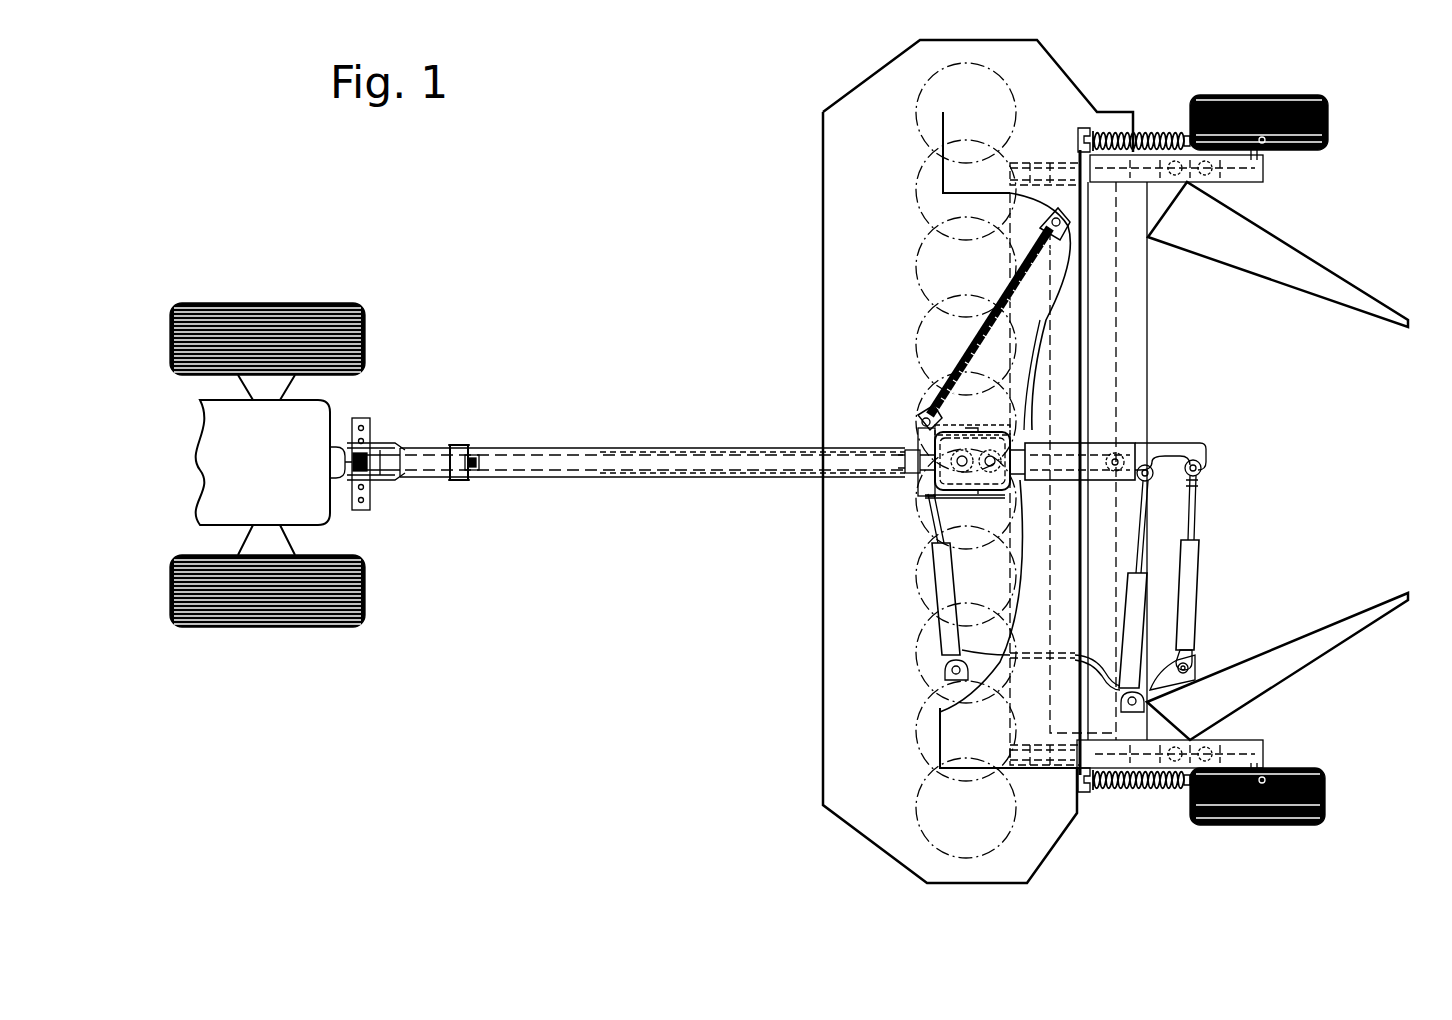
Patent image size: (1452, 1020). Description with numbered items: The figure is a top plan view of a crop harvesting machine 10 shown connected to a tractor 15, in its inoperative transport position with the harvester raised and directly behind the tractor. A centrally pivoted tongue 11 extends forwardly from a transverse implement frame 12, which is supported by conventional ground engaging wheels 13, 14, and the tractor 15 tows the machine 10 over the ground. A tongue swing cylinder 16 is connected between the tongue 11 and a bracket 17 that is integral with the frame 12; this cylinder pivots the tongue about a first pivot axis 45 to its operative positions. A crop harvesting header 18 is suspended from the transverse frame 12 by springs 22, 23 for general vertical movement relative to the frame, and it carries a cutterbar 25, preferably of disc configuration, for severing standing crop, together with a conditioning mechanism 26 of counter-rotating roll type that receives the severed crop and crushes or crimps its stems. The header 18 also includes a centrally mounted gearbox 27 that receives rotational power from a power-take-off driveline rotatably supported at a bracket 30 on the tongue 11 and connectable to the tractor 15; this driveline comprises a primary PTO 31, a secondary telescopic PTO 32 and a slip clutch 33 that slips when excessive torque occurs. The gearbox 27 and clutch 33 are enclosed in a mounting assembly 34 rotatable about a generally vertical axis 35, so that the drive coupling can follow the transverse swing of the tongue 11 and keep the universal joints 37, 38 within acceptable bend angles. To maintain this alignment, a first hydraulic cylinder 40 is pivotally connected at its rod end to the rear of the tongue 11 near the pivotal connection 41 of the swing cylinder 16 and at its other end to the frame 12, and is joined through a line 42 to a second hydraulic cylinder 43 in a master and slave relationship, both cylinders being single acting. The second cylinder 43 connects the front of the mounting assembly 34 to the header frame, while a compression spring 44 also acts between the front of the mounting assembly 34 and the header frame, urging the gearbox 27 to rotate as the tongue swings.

The crop harvesting machine 10 is at (733, 98).
The tongue 11 is at (655, 443).
The transverse implement frame 12 is at (1148, 333).
The ground engaging wheel 13 is at (1328, 800).
The ground engaging wheel 14 is at (1330, 112).
The tractor 15 is at (267, 286).
The tongue swing cylinder 16 is at (1200, 548).
The bracket 17 is at (1165, 691).
The crop harvesting header 18 is at (780, 740).
The spring 22 is at (1140, 793).
The spring 23 is at (1158, 132).
The cutterbar 25 is at (910, 814).
The conditioning mechanism 26 is at (1064, 322).
The gearbox 27 is at (985, 501).
The bracket 30 is at (459, 492).
The primary PTO 31 is at (430, 455).
The secondary telescopic PTO 32 is at (745, 450).
The slip clutch 33 is at (940, 488).
The mounting assembly 34 is at (980, 420).
The vertical axis 35 is at (1012, 440).
The universal joint 37 is at (914, 450).
The universal joint 38 is at (470, 450).
The first hydraulic cylinder 40 is at (1135, 626).
The pivotal connection 41 is at (1205, 468).
The line 42 is at (1080, 686).
The second hydraulic cylinder 43 is at (936, 592).
The compression spring 44 is at (1003, 283).
The first pivot axis 45 is at (1130, 450).